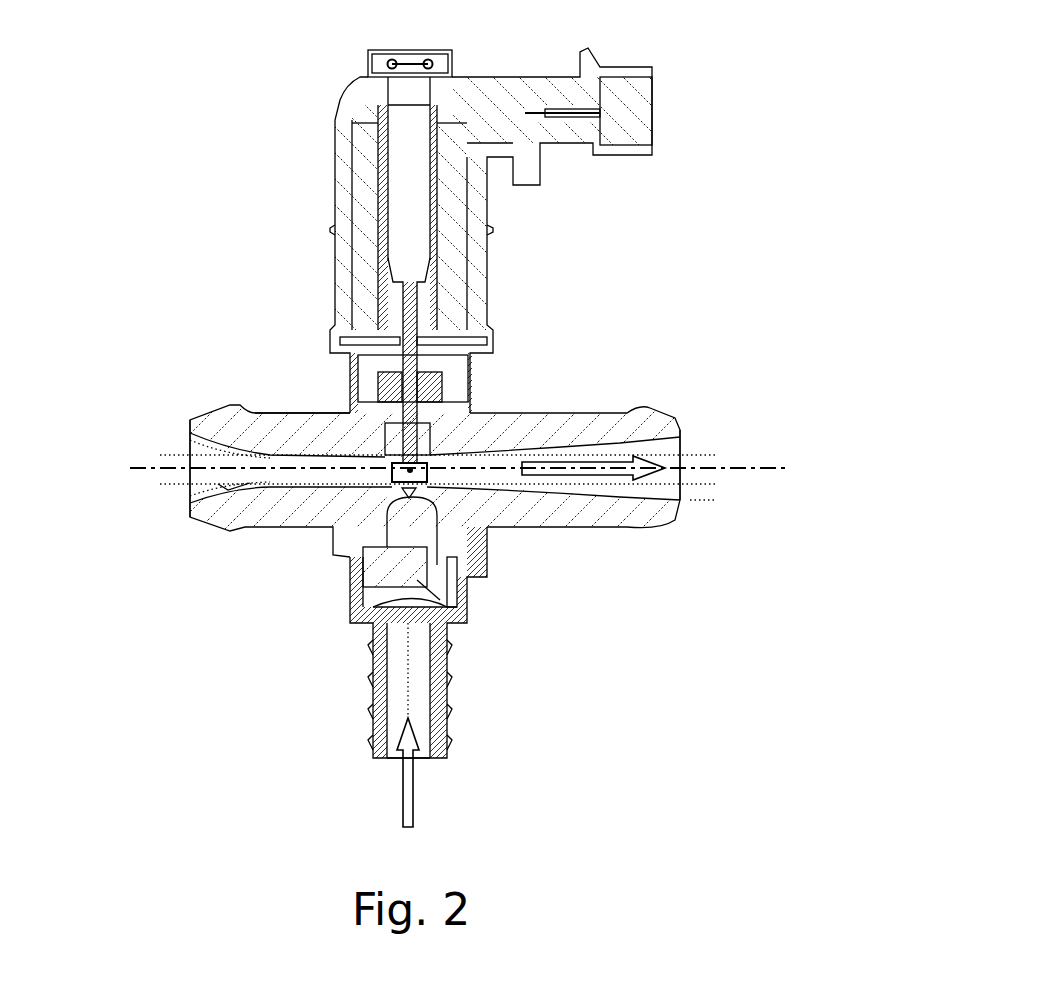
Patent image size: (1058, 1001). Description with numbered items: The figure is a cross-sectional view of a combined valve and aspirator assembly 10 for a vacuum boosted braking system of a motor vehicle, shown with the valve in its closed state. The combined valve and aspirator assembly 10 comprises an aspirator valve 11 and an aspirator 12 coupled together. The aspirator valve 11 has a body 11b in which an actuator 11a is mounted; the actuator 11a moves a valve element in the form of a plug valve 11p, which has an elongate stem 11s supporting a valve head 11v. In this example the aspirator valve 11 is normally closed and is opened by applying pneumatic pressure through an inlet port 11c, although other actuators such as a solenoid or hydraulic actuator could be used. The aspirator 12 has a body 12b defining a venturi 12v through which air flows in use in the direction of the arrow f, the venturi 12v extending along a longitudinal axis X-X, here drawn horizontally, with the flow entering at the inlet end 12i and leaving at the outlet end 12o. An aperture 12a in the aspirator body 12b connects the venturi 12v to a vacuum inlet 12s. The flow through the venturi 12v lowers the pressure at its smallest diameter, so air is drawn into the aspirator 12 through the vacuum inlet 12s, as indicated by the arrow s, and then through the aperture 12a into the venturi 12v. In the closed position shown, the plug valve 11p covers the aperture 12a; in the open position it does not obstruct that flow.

The combined valve and aspirator assembly 10 is at (152, 176).
The aspirator valve 11 is at (335, 182).
The actuator 11a is at (383, 107).
The body 11b is at (487, 243).
The inlet port 11c is at (646, 98).
The plug valve 11p is at (394, 338).
The elongate stem 11s is at (422, 443).
The valve head 11v is at (400, 478).
The aspirator 12 is at (209, 399).
The aperture 12a is at (398, 502).
The body 12b is at (287, 413).
The inlet 12i is at (179, 433).
The outlet 12o is at (691, 439).
The venturi 12v is at (218, 484).
The vacuum inlet 12s is at (372, 672).
The longitudinal axis X is at (432, 476).
The arrow f is at (597, 475).
The arrow s is at (403, 785).